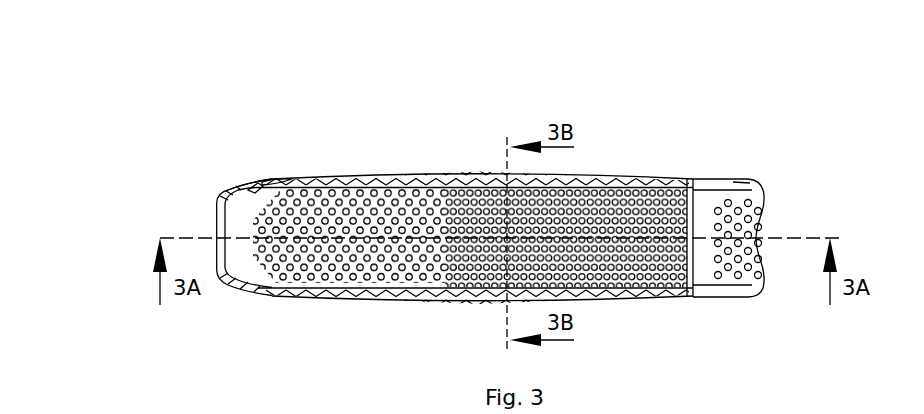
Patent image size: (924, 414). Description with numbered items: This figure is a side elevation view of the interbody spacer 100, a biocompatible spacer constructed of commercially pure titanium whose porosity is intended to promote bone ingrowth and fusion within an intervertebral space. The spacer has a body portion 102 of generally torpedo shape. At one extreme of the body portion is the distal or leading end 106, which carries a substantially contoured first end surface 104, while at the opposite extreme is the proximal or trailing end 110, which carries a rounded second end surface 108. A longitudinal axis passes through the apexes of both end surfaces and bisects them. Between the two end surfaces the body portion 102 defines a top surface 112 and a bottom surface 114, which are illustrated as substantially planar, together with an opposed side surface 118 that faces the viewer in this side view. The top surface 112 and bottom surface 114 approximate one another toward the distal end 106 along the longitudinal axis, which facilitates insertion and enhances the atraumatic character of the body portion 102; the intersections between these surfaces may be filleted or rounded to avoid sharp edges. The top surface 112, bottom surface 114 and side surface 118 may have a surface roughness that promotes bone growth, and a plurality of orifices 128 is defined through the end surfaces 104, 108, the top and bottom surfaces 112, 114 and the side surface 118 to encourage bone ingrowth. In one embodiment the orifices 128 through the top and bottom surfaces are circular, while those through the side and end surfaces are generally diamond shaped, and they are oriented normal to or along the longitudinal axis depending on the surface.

The interbody spacer 100 is at (700, 115).
The body portion 102 is at (273, 170).
The first end surface 104 is at (216, 207).
The distal or leading end 106 is at (197, 175).
The second end surface 108 is at (765, 193).
The proximal or trailing end 110 is at (806, 213).
The top surface 112 is at (363, 177).
The bottom surface 114 is at (340, 300).
The side surface 118 is at (250, 273).
The plurality of orifices 128 is at (643, 298).